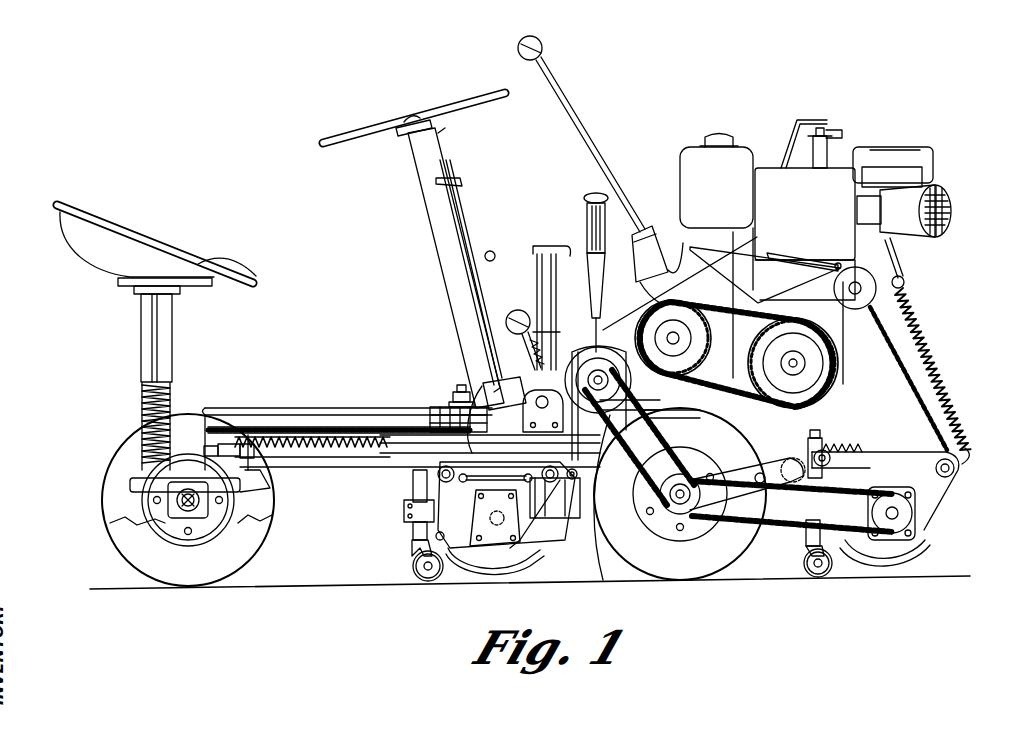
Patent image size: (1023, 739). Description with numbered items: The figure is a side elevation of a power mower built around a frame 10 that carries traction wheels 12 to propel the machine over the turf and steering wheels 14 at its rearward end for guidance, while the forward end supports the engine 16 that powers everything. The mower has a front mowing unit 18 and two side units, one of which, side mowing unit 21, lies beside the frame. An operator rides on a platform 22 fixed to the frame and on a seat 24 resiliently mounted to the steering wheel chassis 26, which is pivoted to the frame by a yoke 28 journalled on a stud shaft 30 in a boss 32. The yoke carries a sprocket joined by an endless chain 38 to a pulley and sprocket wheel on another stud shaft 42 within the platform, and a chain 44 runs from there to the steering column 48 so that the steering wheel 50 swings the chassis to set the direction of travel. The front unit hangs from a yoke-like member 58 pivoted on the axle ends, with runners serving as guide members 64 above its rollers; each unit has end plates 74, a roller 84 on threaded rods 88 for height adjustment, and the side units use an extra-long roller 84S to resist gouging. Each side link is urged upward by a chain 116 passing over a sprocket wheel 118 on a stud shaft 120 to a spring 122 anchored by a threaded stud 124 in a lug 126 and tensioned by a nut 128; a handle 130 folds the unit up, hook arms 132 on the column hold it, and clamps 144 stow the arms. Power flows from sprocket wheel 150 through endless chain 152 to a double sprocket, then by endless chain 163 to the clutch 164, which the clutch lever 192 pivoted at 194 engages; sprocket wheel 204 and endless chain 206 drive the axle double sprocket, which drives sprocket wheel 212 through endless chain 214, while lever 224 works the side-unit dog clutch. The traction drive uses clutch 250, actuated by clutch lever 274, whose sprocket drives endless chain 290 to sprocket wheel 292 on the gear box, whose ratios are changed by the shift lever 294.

The frame 10 is at (381, 454).
The traction wheels 12 is at (724, 578).
The steering wheels 14 is at (116, 446).
The engine 16 is at (778, 165).
The front mowing unit 18 is at (930, 468).
The side mowing unit 21 is at (506, 518).
The platform 22 is at (362, 407).
The seat 24 is at (122, 212).
The steering wheel chassis 26 is at (240, 503).
The yoke 28 is at (250, 428).
The stud shaft 30 is at (250, 491).
The boss 32 is at (258, 472).
The endless chain 38 is at (300, 426).
The stud shaft 42 is at (452, 392).
The chain 44 is at (430, 412).
The steering column 48 is at (436, 236).
The steering wheel 50 is at (466, 100).
The yoke-like member 58 is at (776, 468).
The guide members 64 is at (816, 446).
The end plates 74 is at (898, 458).
The roller 84 is at (804, 570).
The roller 84S is at (412, 574).
The threaded rod 88 is at (412, 488).
The chain 116 is at (404, 506).
The sprocket wheel 118 is at (413, 522).
The stud shaft 120 is at (486, 392).
The spring 122 is at (312, 458).
The threaded stud 124 is at (240, 440).
The lug 126 is at (222, 440).
The nut 128 is at (206, 450).
The handle 130 is at (522, 540).
The hook arms 132 is at (480, 222).
The clamps 144 is at (492, 250).
The sprocket wheel 150 is at (812, 318).
The endless chain 152 is at (766, 300).
The endless chain 163 is at (660, 400).
The clutch 164 is at (576, 342).
The clutch lever 192 is at (592, 197).
The pivot 194 is at (614, 532).
The sprocket wheel 204 is at (646, 410).
The endless chain 206 is at (650, 432).
The sprocket wheel 212 is at (912, 516).
The endless chain 214 is at (780, 526).
The lever 224 is at (518, 310).
The clutch 250 is at (870, 336).
The clutch lever 274 is at (545, 248).
The endless chain 290 is at (684, 262).
The sprocket wheel 292 is at (673, 338).
The shift lever 294 is at (560, 80).